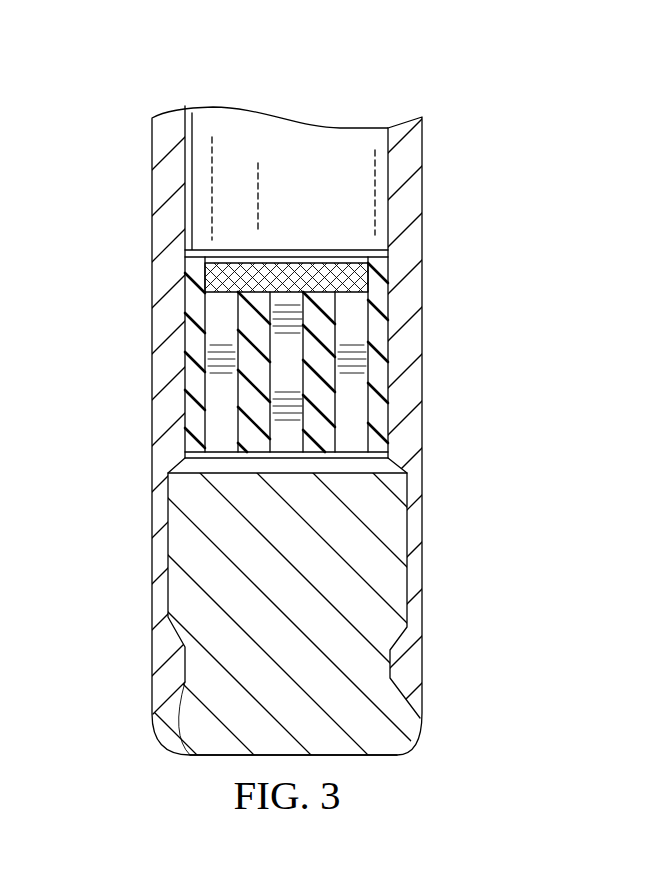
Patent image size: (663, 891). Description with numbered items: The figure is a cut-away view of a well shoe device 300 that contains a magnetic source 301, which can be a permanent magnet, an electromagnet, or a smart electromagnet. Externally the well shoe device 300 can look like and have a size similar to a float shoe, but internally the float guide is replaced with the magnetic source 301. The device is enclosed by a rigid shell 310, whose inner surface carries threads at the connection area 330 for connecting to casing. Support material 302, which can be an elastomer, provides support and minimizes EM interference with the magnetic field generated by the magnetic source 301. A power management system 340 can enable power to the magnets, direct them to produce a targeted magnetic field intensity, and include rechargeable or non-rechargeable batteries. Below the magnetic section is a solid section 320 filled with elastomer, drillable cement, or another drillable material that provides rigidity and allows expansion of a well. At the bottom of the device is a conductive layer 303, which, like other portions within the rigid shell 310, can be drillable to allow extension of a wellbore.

The well shoe device 300 is at (362, 78).
The magnetic source 301 is at (183, 300).
The support material 302 is at (353, 408).
The conductive layer 303 is at (210, 757).
The rigid shell 310 is at (425, 283).
The solid section 320 is at (378, 580).
The connection area 330 is at (253, 130).
The power management system 340 is at (303, 270).